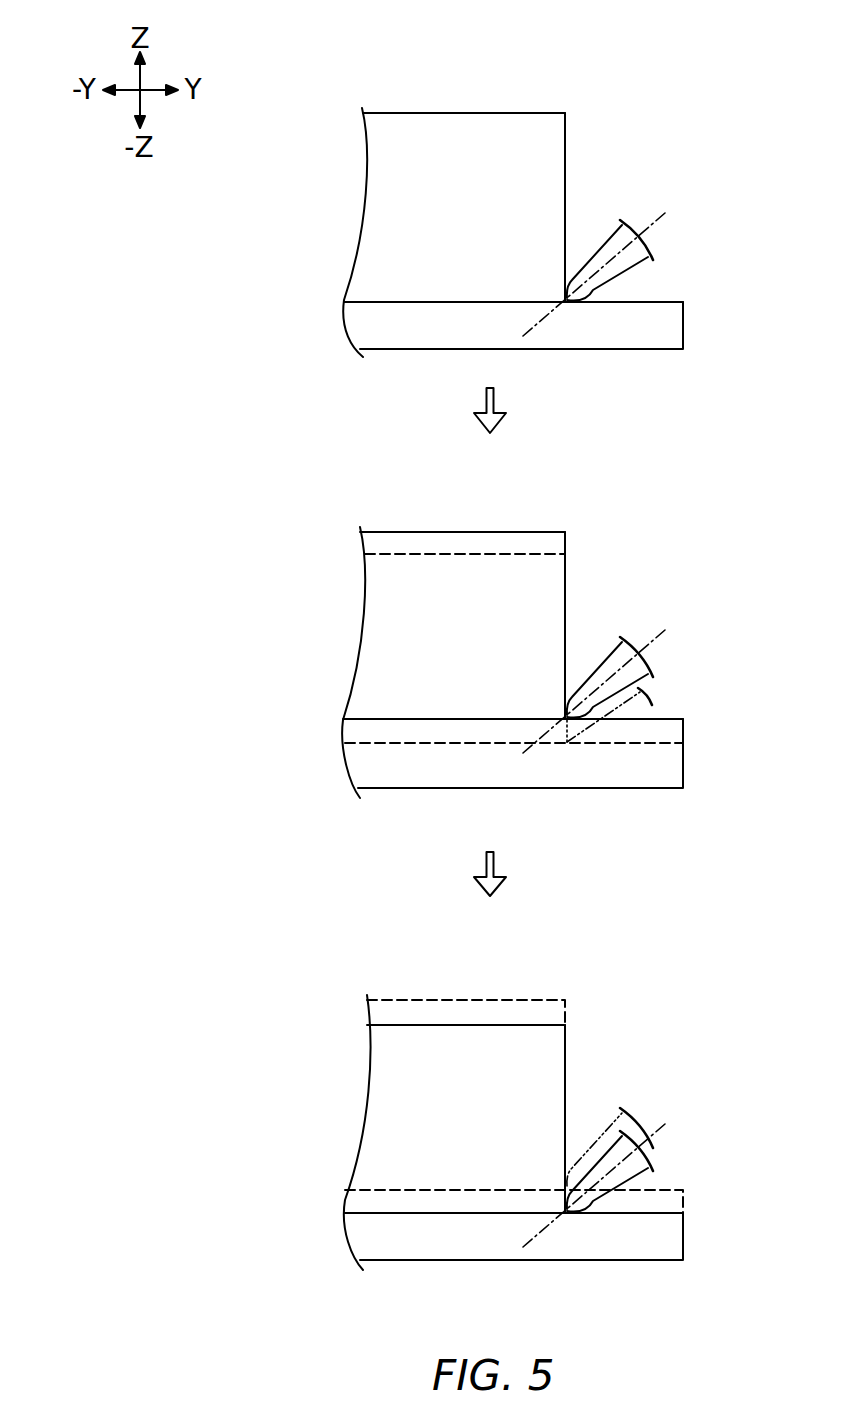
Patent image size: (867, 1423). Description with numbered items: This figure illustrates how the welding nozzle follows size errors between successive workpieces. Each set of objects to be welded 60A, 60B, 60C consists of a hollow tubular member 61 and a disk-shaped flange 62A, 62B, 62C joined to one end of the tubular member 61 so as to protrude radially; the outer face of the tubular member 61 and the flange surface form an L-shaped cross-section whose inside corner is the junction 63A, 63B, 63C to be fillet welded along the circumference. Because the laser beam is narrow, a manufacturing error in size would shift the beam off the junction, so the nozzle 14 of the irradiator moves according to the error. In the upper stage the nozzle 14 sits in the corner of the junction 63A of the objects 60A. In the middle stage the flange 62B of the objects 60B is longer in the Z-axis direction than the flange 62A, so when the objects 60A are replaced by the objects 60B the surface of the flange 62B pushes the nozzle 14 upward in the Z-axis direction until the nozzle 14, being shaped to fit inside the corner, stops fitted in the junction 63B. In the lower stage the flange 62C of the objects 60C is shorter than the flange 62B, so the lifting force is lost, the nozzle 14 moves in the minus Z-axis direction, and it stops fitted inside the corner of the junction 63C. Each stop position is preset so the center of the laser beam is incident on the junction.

The objects to be welded 60A is at (358, 90).
The objects to be welded 60B is at (364, 502).
The objects to be welded 60C is at (371, 967).
The tubular member 61 is at (533, 122).
The flange 62A is at (672, 323).
The flange 62B is at (680, 734).
The flange 62C is at (678, 1240).
The junction 63A is at (568, 294).
The junction 63B is at (568, 711).
The junction 63C is at (568, 1205).
The nozzle 14 is at (620, 222).